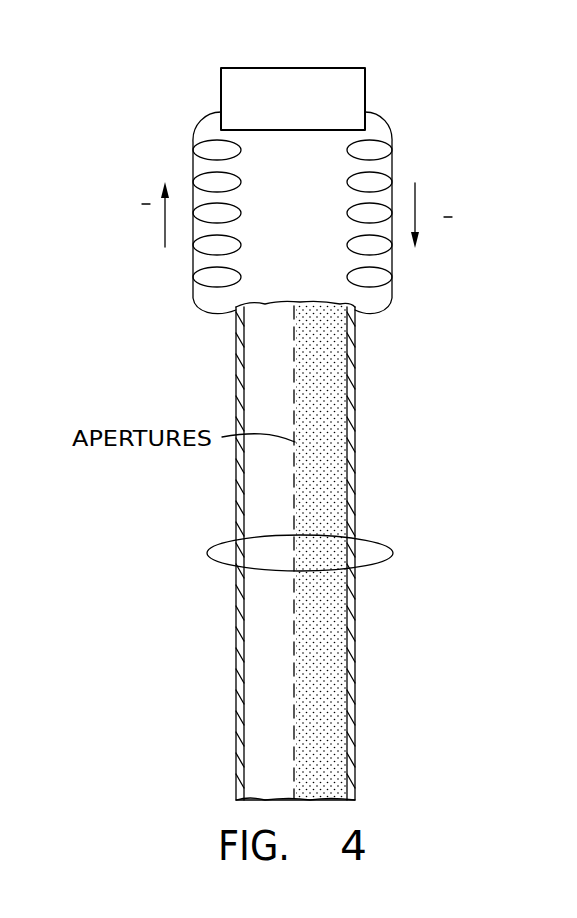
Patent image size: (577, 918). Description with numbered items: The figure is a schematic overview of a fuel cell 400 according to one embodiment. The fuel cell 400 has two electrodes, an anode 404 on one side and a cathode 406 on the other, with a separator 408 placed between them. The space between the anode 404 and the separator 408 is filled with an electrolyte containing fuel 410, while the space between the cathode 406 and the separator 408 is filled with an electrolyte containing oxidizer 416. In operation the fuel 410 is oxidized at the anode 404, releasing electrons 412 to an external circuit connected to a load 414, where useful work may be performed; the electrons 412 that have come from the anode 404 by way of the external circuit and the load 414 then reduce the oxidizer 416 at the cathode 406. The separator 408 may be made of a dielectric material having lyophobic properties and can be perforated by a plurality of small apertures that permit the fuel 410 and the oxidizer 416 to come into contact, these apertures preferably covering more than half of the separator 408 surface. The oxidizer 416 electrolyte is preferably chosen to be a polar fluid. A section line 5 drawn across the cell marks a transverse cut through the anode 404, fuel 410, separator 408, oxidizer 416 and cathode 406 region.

The fuel cell 400 is at (158, 566).
The anode 404 is at (236, 363).
The cathode 406 is at (355, 368).
The separator 408 is at (292, 342).
The fuel 410 is at (260, 720).
The electrons 412 is at (165, 232).
The load 414 is at (287, 68).
The oxidizer 416 is at (335, 750).
The section line 5 is at (373, 545).